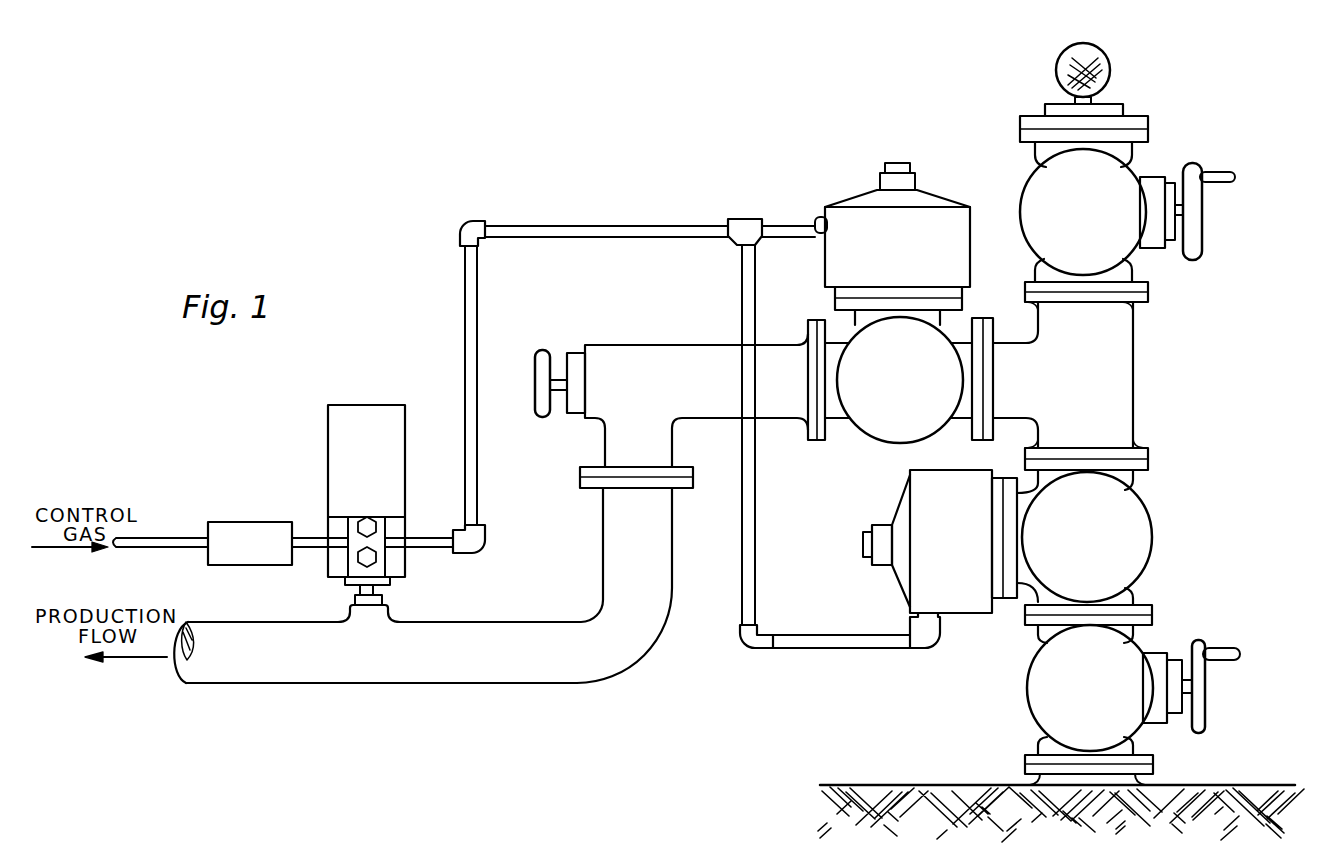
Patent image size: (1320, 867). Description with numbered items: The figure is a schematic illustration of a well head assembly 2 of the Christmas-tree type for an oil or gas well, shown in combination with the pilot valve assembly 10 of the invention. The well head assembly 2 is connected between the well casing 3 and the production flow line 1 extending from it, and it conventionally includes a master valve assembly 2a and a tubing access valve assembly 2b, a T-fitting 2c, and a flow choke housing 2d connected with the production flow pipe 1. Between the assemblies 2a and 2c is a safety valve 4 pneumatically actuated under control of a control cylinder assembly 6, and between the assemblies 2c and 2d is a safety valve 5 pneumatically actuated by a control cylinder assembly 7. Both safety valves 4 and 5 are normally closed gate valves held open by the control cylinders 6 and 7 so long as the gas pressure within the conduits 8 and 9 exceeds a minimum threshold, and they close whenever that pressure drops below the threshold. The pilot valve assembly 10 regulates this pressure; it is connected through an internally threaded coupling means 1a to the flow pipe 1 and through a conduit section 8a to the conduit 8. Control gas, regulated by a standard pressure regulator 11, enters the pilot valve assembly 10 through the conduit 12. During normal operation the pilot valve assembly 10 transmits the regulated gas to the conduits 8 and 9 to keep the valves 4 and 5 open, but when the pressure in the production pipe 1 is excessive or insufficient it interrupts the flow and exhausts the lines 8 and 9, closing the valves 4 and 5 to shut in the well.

The production flow line 1 is at (438, 677).
The internally threaded coupling means 1a is at (378, 618).
The well head assembly 2 is at (1116, 408).
The master valve assembly 2a is at (1076, 700).
The tubing access valve assembly 2b is at (1069, 224).
The T-fitting 2c is at (1069, 391).
The flow choke housing 2d is at (651, 398).
The well casing 3 is at (1137, 780).
The safety valve 4 is at (1075, 551).
The safety valve 5 is at (889, 392).
The control cylinder assembly 6 is at (939, 557).
The control cylinder assembly 7 is at (886, 260).
The conduit 8 is at (625, 226).
The conduit section 8a is at (432, 538).
The conduit 9 is at (755, 530).
The pilot valve assembly 10 is at (353, 474).
The pressure regulator 11 is at (237, 555).
The conduit 12 is at (307, 537).